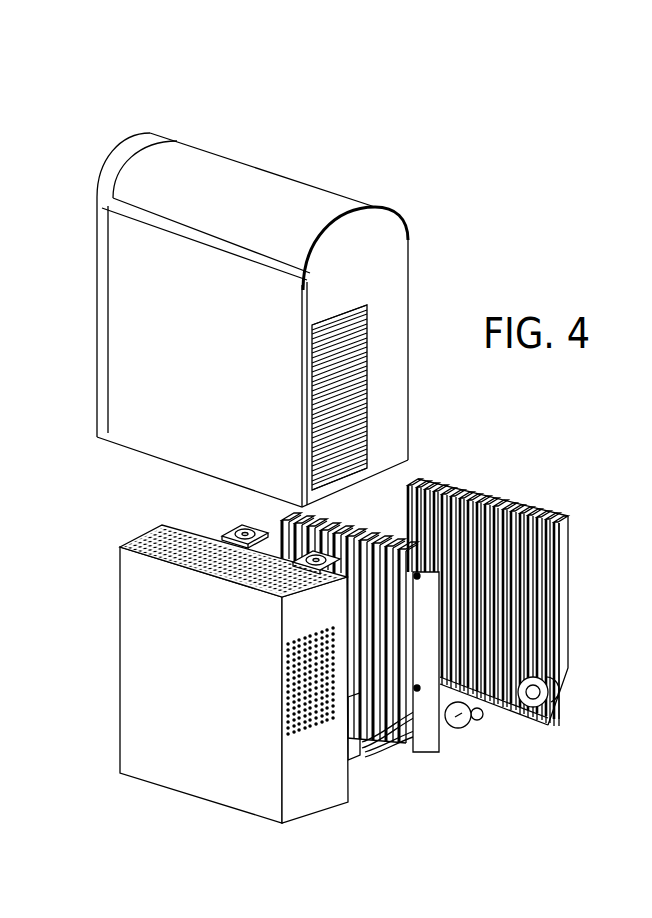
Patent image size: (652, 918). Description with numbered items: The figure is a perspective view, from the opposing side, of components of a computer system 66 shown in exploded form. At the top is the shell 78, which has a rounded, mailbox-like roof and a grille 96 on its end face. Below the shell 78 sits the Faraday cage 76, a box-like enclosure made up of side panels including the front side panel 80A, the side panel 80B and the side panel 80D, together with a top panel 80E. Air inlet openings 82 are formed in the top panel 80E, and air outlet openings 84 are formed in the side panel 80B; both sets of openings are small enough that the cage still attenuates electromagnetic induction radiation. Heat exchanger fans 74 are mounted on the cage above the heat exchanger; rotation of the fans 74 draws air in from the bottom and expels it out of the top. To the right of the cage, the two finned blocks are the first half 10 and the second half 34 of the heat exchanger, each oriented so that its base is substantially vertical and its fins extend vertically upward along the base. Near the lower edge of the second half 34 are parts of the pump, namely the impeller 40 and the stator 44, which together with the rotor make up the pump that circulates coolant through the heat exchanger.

The computer system 66 is at (300, 102).
The shell 78 is at (325, 197).
The ventilation grille 96 is at (357, 412).
The Faraday cage 76 is at (108, 546).
The side panel 80D is at (111, 619).
The side panel 80A is at (142, 688).
The side panel 80B is at (337, 785).
The top panel 80E is at (300, 570).
The air inlet openings 82 is at (190, 530).
The air outlet openings 84 is at (307, 727).
The heat exchanger fans 74 is at (237, 527).
The first half 10 is at (366, 539).
The second half 34 is at (558, 532).
The stator 44 is at (558, 698).
The impeller 40 is at (468, 730).